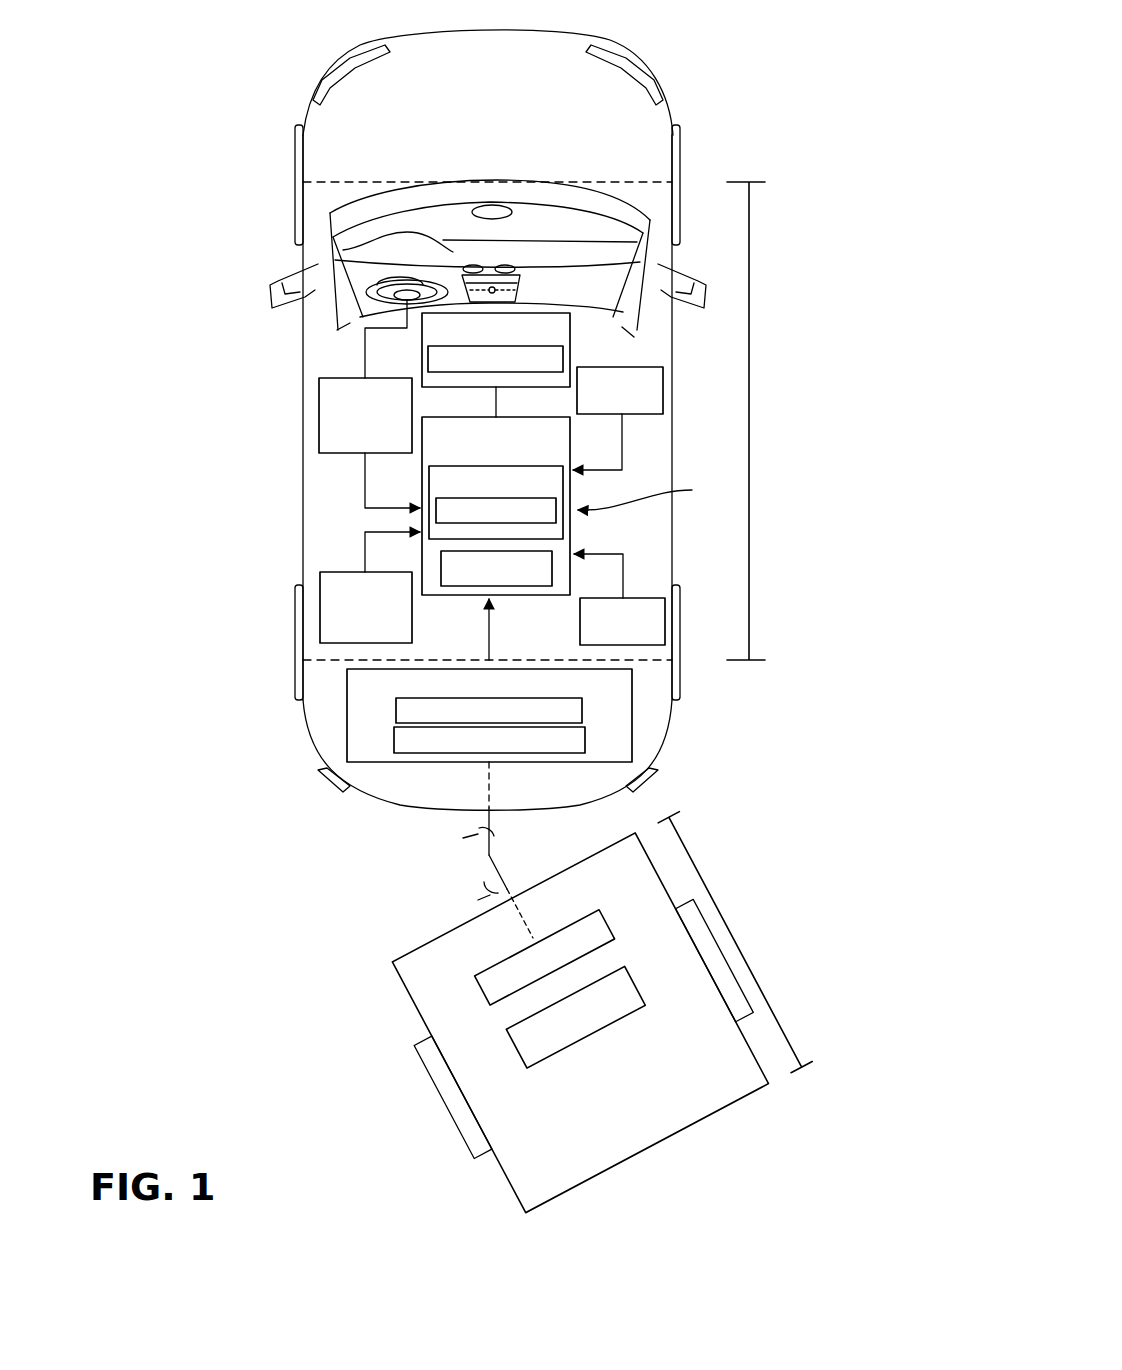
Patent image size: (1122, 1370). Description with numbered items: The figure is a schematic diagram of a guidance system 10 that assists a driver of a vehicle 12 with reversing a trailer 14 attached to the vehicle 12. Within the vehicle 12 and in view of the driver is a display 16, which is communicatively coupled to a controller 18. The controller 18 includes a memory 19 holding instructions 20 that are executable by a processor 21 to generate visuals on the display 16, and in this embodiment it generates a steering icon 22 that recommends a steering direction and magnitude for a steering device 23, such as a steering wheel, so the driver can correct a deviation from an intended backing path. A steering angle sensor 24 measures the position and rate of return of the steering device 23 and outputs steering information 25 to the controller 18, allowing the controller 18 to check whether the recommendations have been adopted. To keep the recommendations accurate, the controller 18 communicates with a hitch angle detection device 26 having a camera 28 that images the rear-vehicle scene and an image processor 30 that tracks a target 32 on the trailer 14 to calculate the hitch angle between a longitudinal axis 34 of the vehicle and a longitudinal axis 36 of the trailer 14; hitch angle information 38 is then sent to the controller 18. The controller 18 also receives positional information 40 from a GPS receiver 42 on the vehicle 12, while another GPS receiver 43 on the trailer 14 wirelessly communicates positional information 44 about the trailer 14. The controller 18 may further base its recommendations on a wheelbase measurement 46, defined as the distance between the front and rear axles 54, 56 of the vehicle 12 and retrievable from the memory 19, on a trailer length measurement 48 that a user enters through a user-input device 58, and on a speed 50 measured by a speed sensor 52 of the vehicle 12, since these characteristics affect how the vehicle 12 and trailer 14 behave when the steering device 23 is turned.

The guidance system 10 is at (158, 133).
The vehicle 12 is at (323, 75).
The trailer 14 is at (393, 962).
The display 16 is at (525, 313).
The controller 18 is at (571, 492).
The memory 19 is at (429, 480).
The instructions 20 is at (436, 520).
The processor 21 is at (441, 565).
The steering icon 22 is at (570, 350).
The steering device 23 is at (397, 297).
The steering angle sensor 24 is at (319, 396).
The steering information 25 is at (362, 503).
The hitch angle detection device 26 is at (632, 680).
The camera 28 is at (582, 708).
The image processor 30 is at (585, 740).
The target 32 is at (492, 1000).
The longitudinal axis of the vehicle 34 is at (492, 872).
The longitudinal axis of the trailer 36 is at (470, 819).
The hitch angle information 38 is at (492, 636).
The positional information 40 is at (625, 448).
The GPS receiver 42 is at (663, 392).
The GPS receiver 43 is at (507, 1030).
The positional information 44 is at (648, 491).
The wheelbase measurement 46 is at (752, 470).
The trailer length measurement 48 is at (722, 902).
The speed 50 is at (623, 554).
The speed sensor 52 is at (640, 598).
The front axle 54 is at (348, 182).
The rear axle 56 is at (322, 660).
The user-input device 58 is at (320, 610).